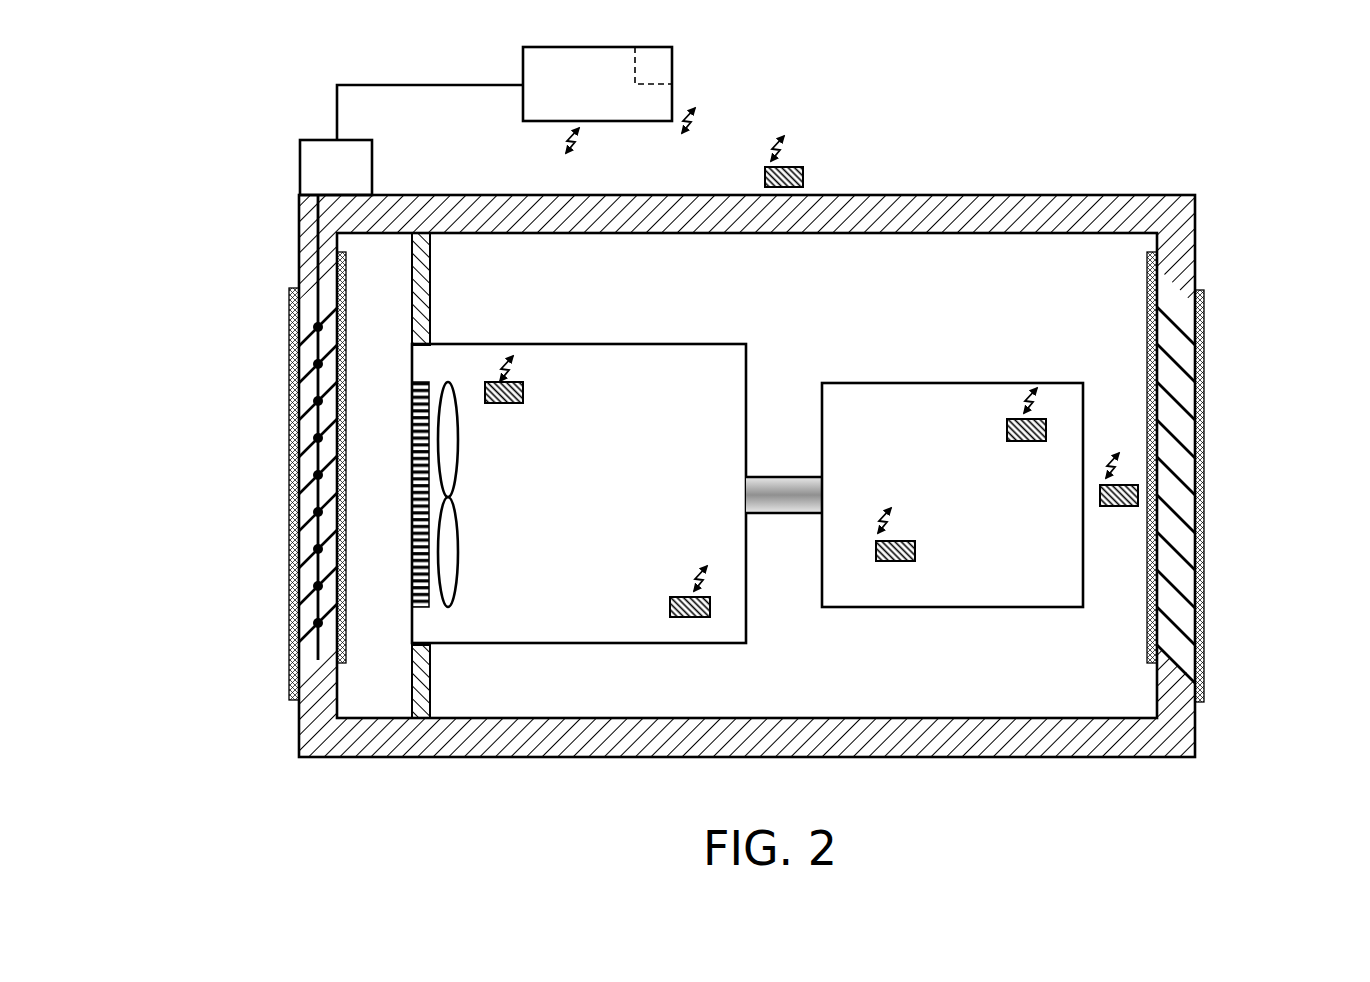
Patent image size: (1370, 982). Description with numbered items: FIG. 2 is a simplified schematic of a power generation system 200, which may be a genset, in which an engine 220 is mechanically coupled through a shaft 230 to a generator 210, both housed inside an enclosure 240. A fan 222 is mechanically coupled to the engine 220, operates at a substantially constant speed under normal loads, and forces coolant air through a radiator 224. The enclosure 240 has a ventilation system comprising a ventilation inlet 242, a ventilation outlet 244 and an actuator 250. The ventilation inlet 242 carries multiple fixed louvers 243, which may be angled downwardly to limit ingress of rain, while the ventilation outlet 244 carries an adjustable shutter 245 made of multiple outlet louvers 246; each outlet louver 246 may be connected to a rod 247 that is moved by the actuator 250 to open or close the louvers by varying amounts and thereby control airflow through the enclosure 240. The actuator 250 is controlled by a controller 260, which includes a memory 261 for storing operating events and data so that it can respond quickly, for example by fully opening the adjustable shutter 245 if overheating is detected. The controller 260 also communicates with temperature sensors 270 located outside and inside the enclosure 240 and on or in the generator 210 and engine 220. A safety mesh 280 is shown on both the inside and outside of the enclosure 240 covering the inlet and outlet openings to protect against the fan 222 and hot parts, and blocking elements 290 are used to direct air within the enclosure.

The power generation system 200 is at (1068, 115).
The generator 210 is at (952, 495).
The engine 220 is at (579, 493).
The fan 222 is at (458, 540).
The radiator 224 is at (429, 607).
The shaft 230 is at (780, 477).
The enclosure 240 is at (1197, 210).
The ventilation inlet 242 is at (1263, 496).
The fixed louvers 243 is at (1190, 558).
The ventilation outlet 244 is at (208, 447).
The adjustable shutter 245 is at (274, 499).
The outlet louvers 246 is at (299, 595).
The rod 247 is at (300, 318).
The actuator 250 is at (411, 140).
The controller 260 is at (656, 81).
The memory 261 is at (672, 52).
The temperature sensors 270 is at (523, 388).
The safety mesh 280 is at (337, 288).
The blocking elements 290 is at (430, 290).